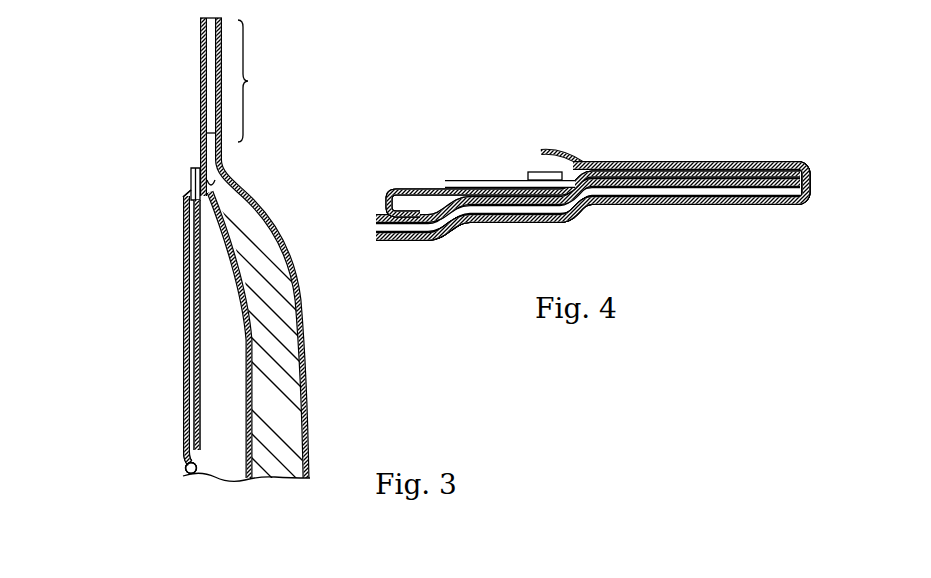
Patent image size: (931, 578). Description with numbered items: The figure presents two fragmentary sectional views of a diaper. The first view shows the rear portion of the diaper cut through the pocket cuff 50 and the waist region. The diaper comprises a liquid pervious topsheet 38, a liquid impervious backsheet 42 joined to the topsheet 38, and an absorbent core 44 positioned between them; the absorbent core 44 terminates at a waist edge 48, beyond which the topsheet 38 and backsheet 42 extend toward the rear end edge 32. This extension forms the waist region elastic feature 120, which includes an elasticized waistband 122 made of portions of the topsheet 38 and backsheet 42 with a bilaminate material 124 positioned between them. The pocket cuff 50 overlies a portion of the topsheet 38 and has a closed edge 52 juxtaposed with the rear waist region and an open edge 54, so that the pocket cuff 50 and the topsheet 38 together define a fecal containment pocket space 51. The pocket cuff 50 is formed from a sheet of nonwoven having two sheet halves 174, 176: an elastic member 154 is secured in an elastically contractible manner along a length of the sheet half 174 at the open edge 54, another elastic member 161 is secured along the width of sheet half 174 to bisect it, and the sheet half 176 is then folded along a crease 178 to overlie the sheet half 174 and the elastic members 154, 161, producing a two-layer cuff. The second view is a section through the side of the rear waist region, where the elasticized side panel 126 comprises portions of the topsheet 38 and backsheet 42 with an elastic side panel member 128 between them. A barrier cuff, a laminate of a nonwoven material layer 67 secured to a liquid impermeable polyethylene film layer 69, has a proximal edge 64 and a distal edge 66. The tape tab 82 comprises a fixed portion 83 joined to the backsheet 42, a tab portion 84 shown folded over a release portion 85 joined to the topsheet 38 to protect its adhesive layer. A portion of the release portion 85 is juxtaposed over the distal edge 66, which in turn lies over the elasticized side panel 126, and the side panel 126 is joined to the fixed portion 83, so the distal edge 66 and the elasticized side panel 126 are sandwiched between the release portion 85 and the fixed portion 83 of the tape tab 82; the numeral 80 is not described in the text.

In FIG. 3, the rear end edge 32 is at (228, 19).
In FIG. 3, the liquid pervious topsheet 38 is at (200, 118).
In FIG. 4, the liquid pervious topsheet 38 is at (540, 205).
In FIG. 3, the liquid impervious backsheet 42 is at (221, 142).
In FIG. 4, the liquid impervious backsheet 42 is at (398, 240).
In FIG. 3, the absorbent core 44 is at (299, 476).
In FIG. 3, the waist edge 48 is at (212, 175).
In FIG. 3, the pocket cuff 50 is at (183, 322).
In FIG. 3, the fecal containment pocket space 51 is at (196, 344).
In FIG. 3, the closed edge 52 is at (170, 172).
In FIG. 3, the open edge 54 is at (172, 484).
In FIG. 4, the proximal edge 64 is at (374, 196).
In FIG. 4, the distal edge 66 is at (573, 166).
In FIG. 4, the nonwoven material layer 67 is at (455, 183).
In FIG. 4, the liquid impermeable polyethylene film layer 69 is at (392, 192).
In FIG. 4, the laminated wall section 80 is at (705, 50).
In FIG. 4, the tape tab 82 is at (762, 86).
In FIG. 4, the fixed portion 83 is at (636, 208).
In FIG. 4, the tab portion 84 is at (692, 160).
In FIG. 4, the release portion 85 is at (538, 172).
In FIG. 3, the waist region elastic feature 120 is at (190, 46).
In FIG. 4, the waist region elastic feature 120 is at (479, 251).
In FIG. 3, the elasticized waistband 122 is at (265, 81).
In FIG. 3, the bilaminate material 124 is at (207, 93).
In FIG. 4, the elasticized side panel 126 is at (378, 250).
In FIG. 4, the elastic side panel member 128 is at (462, 212).
In FIG. 3, the elastic member 154 is at (185, 466).
In FIG. 3, the elastic member 161 is at (196, 295).
In FIG. 3, the sheet half 174 is at (252, 305).
In FIG. 3, the sheet half 176 is at (183, 270).
In FIG. 3, the crease 178 is at (188, 498).